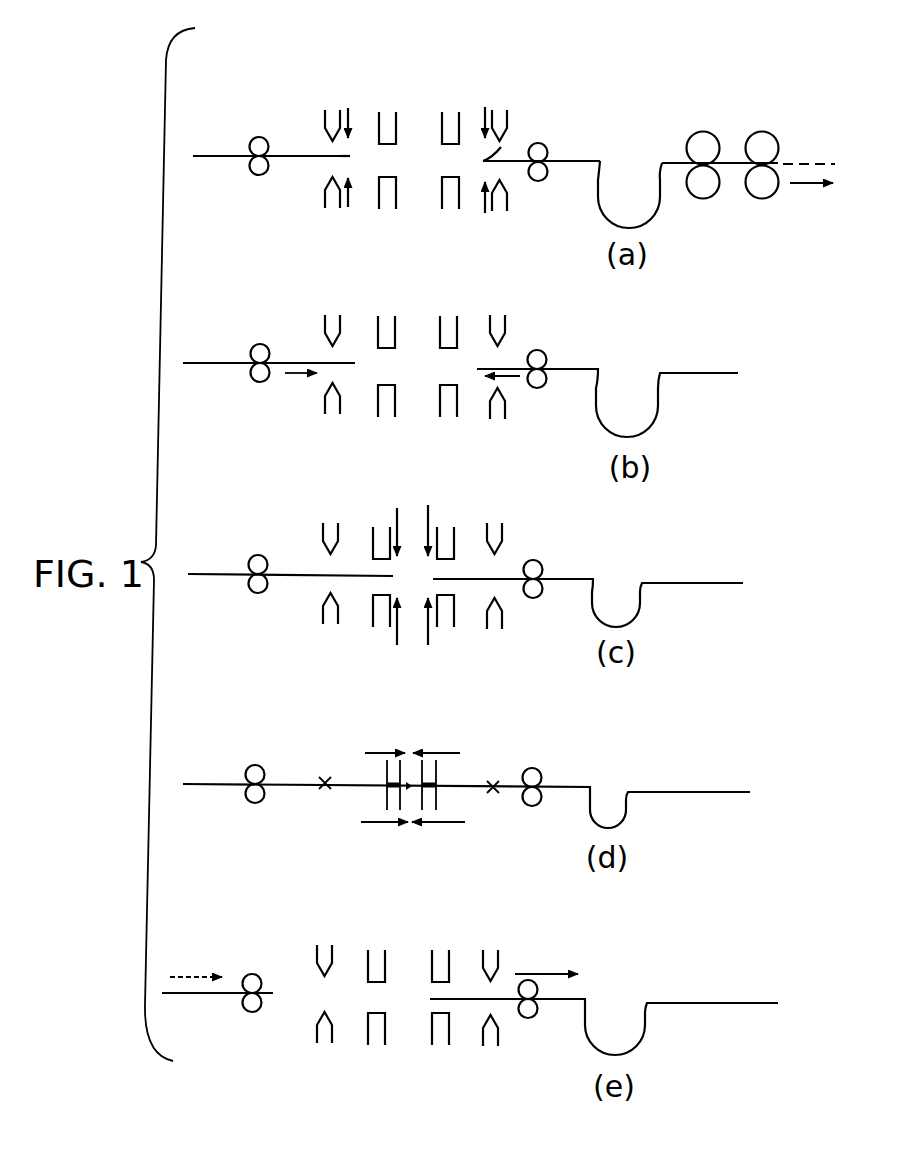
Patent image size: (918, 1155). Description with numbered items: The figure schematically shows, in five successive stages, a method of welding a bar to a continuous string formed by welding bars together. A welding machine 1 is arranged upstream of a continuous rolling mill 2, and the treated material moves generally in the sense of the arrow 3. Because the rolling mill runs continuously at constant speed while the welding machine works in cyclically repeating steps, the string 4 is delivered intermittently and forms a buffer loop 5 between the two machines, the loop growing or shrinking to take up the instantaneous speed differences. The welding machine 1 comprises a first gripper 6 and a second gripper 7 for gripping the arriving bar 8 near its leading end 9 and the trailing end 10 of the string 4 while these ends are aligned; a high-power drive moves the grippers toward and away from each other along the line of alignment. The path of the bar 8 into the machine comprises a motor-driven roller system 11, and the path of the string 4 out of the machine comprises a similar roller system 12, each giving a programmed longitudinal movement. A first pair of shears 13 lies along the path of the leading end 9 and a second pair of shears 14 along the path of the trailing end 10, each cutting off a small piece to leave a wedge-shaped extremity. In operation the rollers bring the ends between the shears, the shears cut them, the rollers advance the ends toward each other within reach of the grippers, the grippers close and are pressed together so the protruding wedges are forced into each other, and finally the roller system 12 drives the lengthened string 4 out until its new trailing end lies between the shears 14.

The welding machine 1 is at (400, 52).
The continuous rolling mill 2 is at (766, 101).
The arrow indicating direction of movement 3 is at (808, 184).
The string 4 is at (682, 163).
The buffer loop 5 is at (653, 218).
The first gripper 6 is at (379, 120).
The second gripper 7 is at (446, 130).
The bar 8 is at (208, 155).
The leading end 9 is at (350, 161).
The trailing end 10 is at (508, 146).
The roller system 11 is at (258, 138).
The roller system 12 is at (540, 142).
The first pair of shears 13 is at (325, 124).
The second pair of shears 14 is at (498, 126).